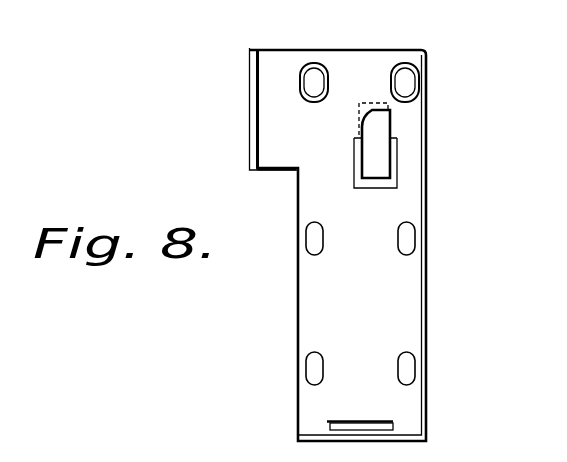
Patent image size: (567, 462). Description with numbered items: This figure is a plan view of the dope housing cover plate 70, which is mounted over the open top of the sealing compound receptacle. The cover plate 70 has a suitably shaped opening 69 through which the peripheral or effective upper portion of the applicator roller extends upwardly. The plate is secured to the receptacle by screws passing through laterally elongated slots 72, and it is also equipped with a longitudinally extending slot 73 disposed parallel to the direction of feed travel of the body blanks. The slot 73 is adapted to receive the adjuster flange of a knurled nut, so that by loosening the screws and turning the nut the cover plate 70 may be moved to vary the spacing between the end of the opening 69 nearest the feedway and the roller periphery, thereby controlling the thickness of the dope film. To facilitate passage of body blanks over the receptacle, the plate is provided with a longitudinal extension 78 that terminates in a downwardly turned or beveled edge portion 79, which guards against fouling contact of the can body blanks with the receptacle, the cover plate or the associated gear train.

The opening 69 is at (393, 130).
The cover plate 70 is at (419, 340).
The laterally elongated slots 72 is at (395, 70).
The longitudinally extending slot 73 is at (352, 419).
The longitudinal extension 78 is at (272, 72).
The downwardly turned or beveled edge portion 79 is at (256, 105).